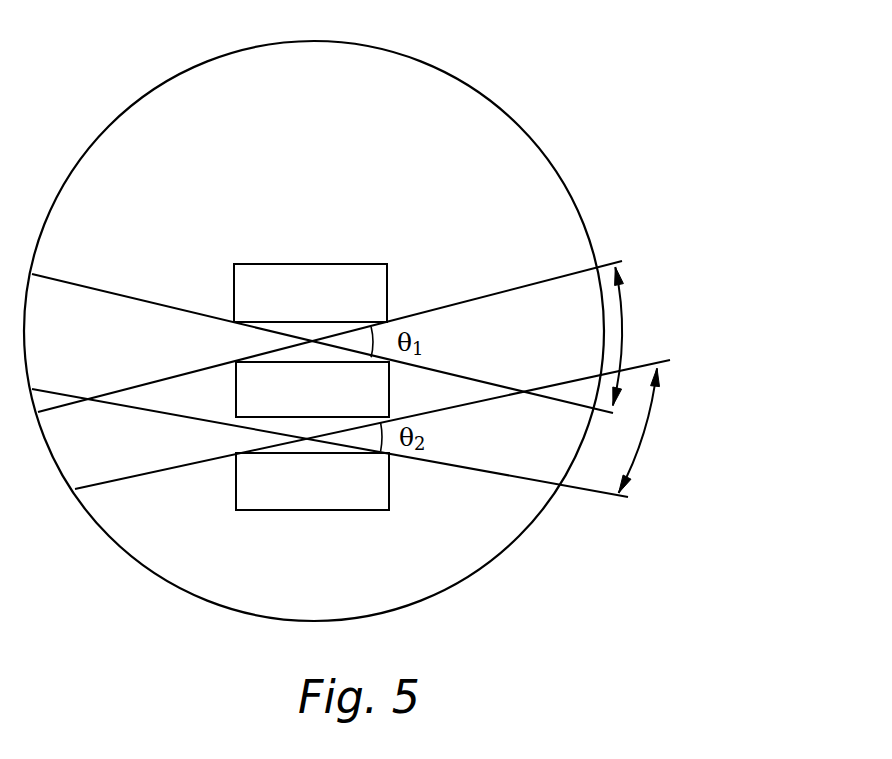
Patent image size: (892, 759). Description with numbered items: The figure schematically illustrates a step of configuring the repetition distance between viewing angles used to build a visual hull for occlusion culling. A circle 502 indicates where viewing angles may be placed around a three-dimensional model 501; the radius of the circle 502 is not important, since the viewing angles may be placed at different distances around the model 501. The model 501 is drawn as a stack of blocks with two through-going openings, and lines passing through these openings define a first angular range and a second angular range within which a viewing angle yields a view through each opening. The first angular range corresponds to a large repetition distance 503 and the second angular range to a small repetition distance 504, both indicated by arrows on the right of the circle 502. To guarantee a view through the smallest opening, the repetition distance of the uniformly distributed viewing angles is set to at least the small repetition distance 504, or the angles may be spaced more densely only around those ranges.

The 3D model 501 is at (338, 264).
The circle 502 is at (447, 72).
The large repetition distance 503 is at (627, 338).
The small repetition distance 504 is at (645, 440).